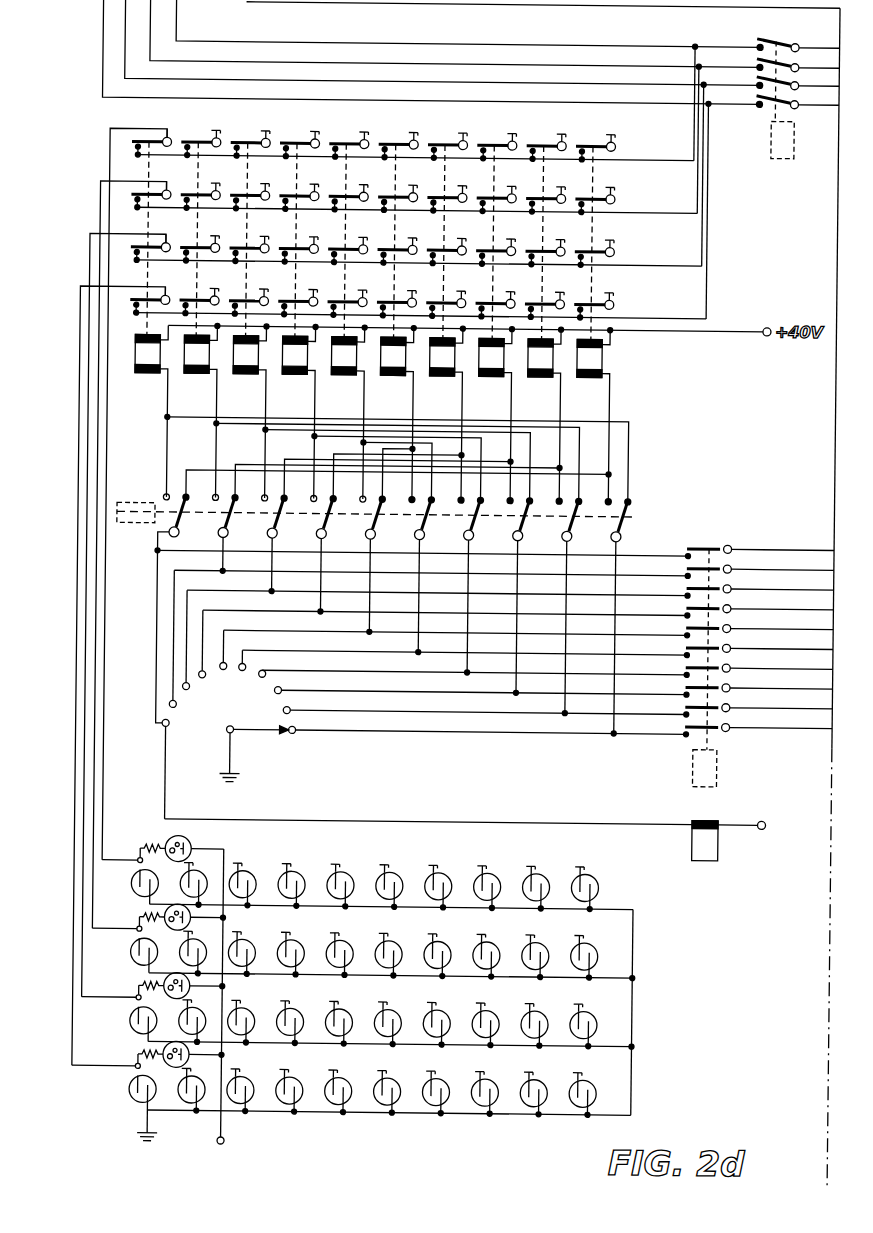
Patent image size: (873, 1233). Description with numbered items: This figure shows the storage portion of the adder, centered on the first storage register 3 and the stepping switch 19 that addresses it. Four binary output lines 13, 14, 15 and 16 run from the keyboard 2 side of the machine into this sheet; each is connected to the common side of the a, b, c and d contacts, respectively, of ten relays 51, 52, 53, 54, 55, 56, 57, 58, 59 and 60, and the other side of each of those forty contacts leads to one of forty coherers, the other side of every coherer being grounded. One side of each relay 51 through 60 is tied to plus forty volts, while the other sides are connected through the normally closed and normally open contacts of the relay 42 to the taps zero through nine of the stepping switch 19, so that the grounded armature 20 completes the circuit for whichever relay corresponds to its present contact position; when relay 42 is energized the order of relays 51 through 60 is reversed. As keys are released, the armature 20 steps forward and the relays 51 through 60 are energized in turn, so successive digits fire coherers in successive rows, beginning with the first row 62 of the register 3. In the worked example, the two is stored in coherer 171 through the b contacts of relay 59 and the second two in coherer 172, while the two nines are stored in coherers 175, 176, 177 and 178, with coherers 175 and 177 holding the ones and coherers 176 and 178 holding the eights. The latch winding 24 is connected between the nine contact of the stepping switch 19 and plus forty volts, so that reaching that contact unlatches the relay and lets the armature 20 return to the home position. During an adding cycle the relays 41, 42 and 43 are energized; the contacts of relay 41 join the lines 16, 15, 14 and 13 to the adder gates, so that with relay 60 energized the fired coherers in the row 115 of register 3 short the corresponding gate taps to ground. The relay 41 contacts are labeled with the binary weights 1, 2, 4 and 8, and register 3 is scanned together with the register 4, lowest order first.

The binary weight one contact position 1 is at (787, 41).
The keyboard 2 is at (787, 61).
The coherer storage register 4 is at (786, 79).
The binary weight eight contact position 8 is at (786, 98).
The binary output line 13 is at (173, 37).
The binary output line 14 is at (146, 37).
The binary output line 15 is at (124, 37).
The binary output line 16 is at (99, 37).
The relay 41 is at (789, 136).
The relay 42 is at (133, 506).
The relay 43 is at (720, 767).
The relay latch winding 24 is at (723, 852).
The stepping switch 19 is at (257, 744).
The armature 20 is at (244, 723).
The first row of coherers 62 is at (77, 266).
The first storage register 3 is at (354, 1002).
The row of coherers 115 is at (354, 1004).
The relay 51 is at (151, 411).
The relay 52 is at (200, 412).
The relay 53 is at (249, 412).
The relay 54 is at (298, 413).
The relay 55 is at (347, 413).
The relay 56 is at (396, 414).
The relay 57 is at (445, 414).
The relay 58 is at (494, 415).
The relay 59 is at (543, 415).
The relay 60 is at (592, 416).
The coherer 171 is at (548, 942).
The coherer 172 is at (599, 942).
The coherer 175 is at (599, 873).
The coherer 176 is at (599, 1079).
The coherer 177 is at (548, 873).
The coherer 178 is at (548, 1079).